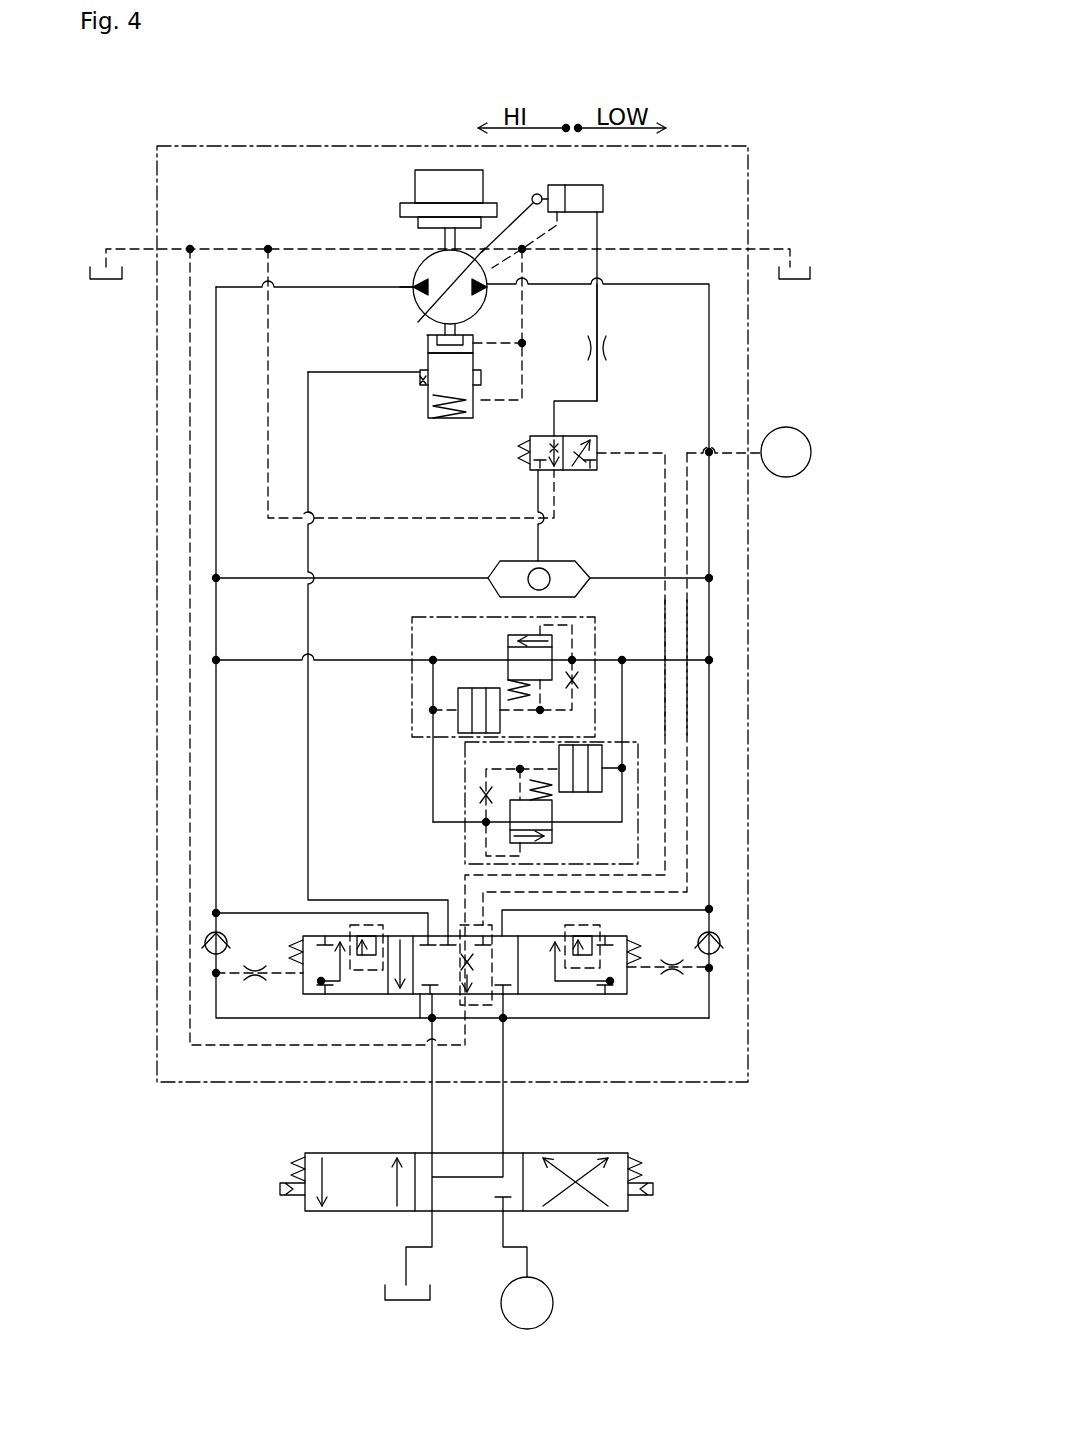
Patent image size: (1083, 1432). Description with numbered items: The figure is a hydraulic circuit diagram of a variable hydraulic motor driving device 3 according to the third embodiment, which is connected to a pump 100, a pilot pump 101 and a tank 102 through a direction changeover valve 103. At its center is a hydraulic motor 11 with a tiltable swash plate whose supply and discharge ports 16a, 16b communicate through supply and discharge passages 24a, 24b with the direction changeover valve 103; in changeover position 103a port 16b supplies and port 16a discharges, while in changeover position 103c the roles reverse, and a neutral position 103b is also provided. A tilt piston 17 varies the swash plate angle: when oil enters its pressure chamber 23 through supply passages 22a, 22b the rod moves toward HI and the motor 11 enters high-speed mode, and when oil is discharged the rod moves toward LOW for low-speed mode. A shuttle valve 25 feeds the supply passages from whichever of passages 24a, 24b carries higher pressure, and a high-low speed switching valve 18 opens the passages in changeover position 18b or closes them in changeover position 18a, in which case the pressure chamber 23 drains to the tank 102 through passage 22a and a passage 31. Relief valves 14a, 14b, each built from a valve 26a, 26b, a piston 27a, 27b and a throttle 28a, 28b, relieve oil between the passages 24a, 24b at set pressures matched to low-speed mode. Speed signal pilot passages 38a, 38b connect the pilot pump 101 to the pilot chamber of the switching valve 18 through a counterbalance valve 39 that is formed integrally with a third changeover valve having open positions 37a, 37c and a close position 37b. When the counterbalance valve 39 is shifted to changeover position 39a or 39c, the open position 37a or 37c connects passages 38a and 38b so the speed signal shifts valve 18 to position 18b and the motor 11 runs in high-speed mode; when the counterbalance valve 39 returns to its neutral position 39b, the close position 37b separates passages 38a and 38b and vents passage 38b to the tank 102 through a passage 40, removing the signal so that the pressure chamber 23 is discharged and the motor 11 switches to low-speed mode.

The variable hydraulic motor driving device 3 is at (748, 132).
The hydraulic motor 11 is at (410, 268).
The supply and discharge port 16a is at (416, 292).
The supply and discharge port 16b is at (486, 292).
The tilt piston 17 is at (616, 182).
The pressure chamber 23 is at (590, 201).
The supply passage 22a is at (600, 390).
The supply passage 22b is at (545, 545).
The high-low speed switching valve 18 is at (522, 473).
The changeover position 18a is at (530, 440).
The changeover position 18b is at (566, 472).
The shuttle valve 25 is at (490, 572).
The passage 31 is at (360, 518).
The passage 40 is at (186, 628).
The supply and discharge passage 24a is at (212, 760).
The supply and discharge passage 24b is at (714, 736).
The relief valve 14a is at (478, 715).
The relief valve 14b is at (575, 762).
The valve 26a is at (508, 646).
The valve 26b is at (548, 840).
The piston 27a is at (458, 712).
The piston 27b is at (602, 766).
The throttle 28a is at (580, 680).
The throttle 28b is at (478, 795).
The speed signal pilot passage 38a is at (690, 680).
The speed signal pilot passage 38b is at (668, 722).
The counterbalance valve 39 is at (484, 1006).
The changeover position 39a is at (326, 938).
The neutral position 39b is at (420, 1002).
The changeover position 39c is at (575, 998).
The open position 37a is at (365, 972).
The close position 37b is at (480, 1012).
The open position 37c is at (604, 928).
The pump 100 is at (560, 1302).
The pilot pump 101 is at (790, 482).
The tank 102 is at (104, 288).
The direction changeover valve 103 is at (516, 1185).
The changeover position 103a is at (342, 1213).
The neutral position 103b is at (513, 1153).
The changeover position 103c is at (590, 1213).